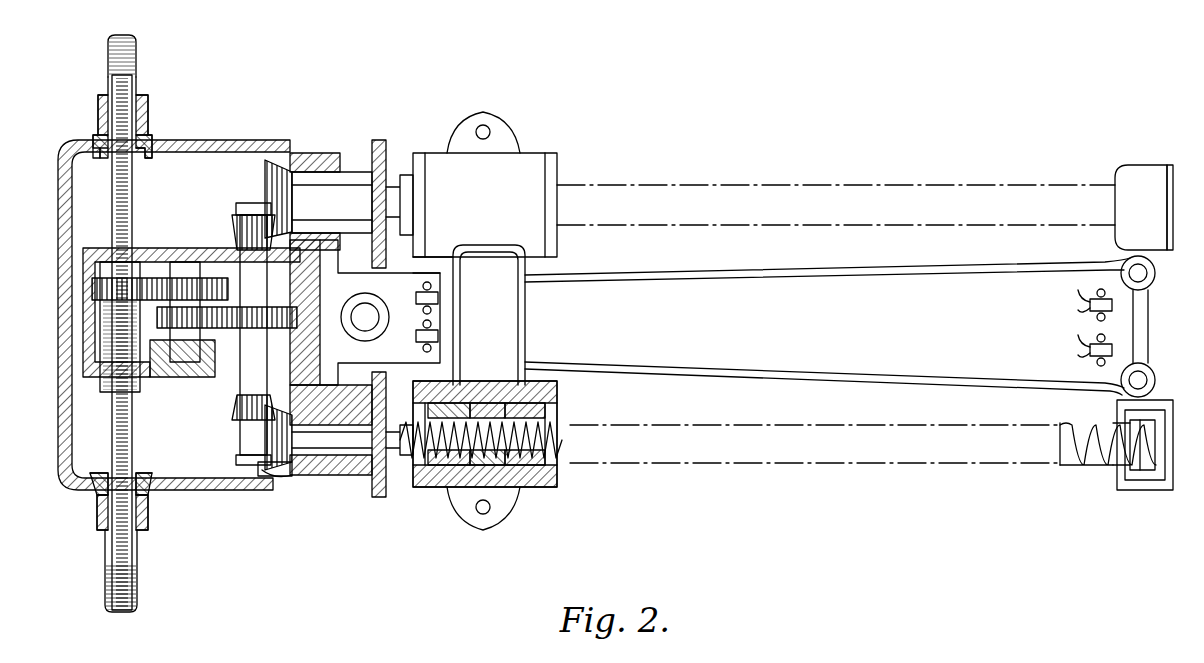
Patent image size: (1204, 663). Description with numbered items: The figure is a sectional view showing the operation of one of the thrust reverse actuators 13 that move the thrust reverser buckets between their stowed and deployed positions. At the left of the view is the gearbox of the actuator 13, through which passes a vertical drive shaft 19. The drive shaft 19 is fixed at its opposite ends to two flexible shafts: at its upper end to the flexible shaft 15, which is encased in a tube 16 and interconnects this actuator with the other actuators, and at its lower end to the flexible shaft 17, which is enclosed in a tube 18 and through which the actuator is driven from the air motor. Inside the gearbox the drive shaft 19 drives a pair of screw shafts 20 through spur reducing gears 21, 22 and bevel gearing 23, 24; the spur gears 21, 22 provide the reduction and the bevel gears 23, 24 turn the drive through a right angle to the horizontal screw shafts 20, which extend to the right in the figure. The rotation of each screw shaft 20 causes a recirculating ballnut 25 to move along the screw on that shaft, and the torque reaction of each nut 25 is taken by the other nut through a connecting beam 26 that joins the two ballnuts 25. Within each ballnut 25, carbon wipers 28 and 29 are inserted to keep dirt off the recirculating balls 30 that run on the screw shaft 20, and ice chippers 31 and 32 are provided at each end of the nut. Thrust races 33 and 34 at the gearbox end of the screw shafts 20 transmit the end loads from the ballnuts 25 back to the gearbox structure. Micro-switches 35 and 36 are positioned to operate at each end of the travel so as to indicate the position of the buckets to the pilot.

The actuator 13 is at (360, 520).
The flexible shaft 15 is at (141, 88).
The tube 16 is at (133, 62).
The flexible shaft 17 is at (140, 546).
The tube 18 is at (138, 582).
The drive shaft 19 is at (140, 385).
The screw shaft 20 is at (400, 185).
The spur reducing gear 21 is at (160, 280).
The spur reducing gear 22 is at (192, 370).
The bevel gear 23 is at (232, 228).
The bevel gear 24 is at (272, 160).
The recirculating ballnut 25 is at (540, 156).
The connecting beam 26 is at (513, 325).
The carbon wiper 28 is at (455, 470).
The carbon wiper 29 is at (525, 483).
The recirculating balls 30 is at (492, 400).
The ice chipper 31 is at (428, 470).
The ice chipper 32 is at (555, 418).
The thrust race 33 is at (330, 478).
The thrust race 34 is at (278, 478).
The micro-switch 35 is at (440, 338).
The micro-switch 36 is at (1088, 350).